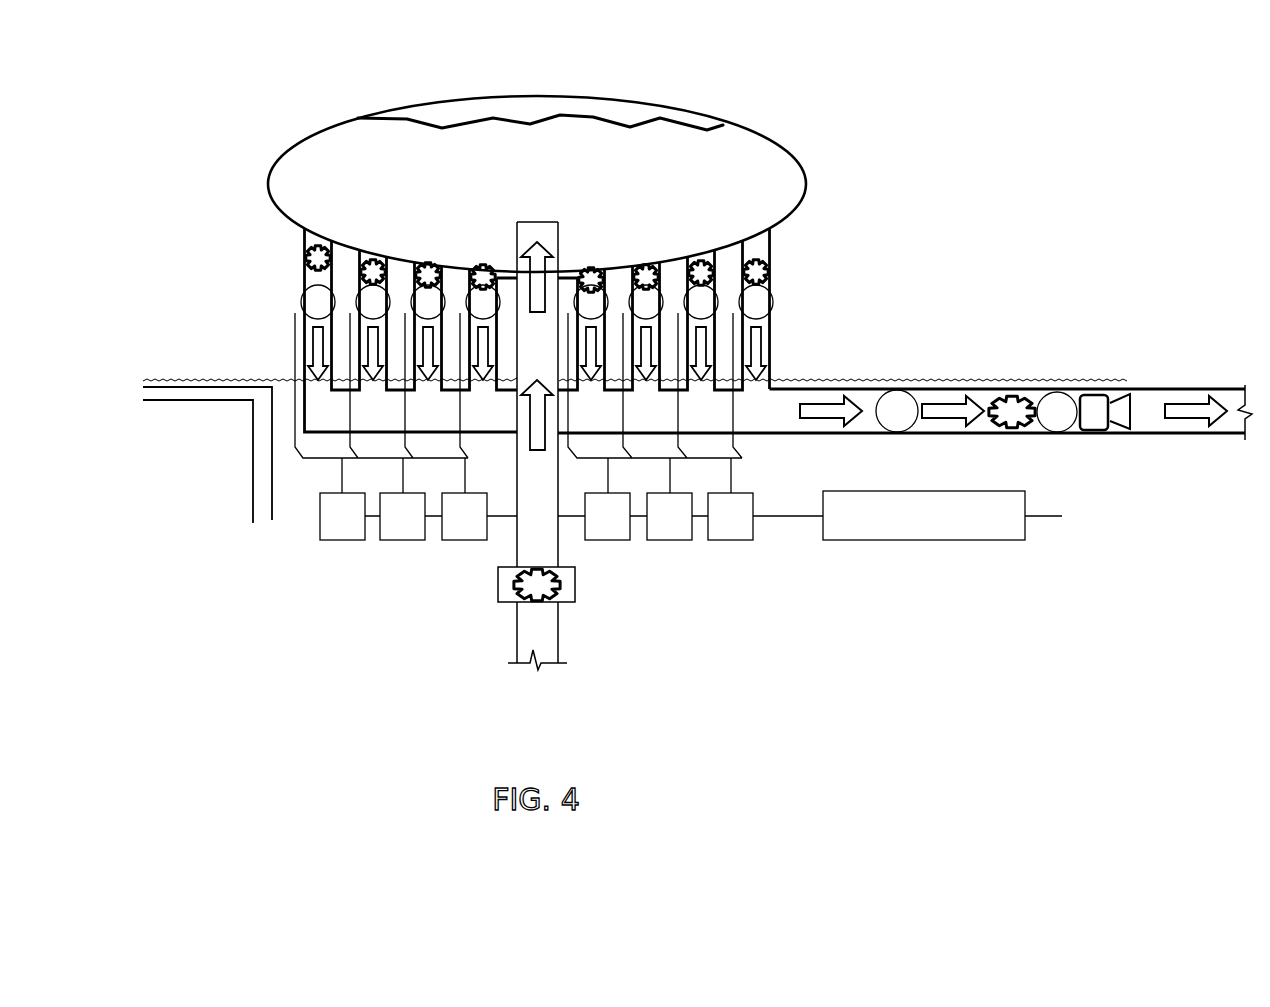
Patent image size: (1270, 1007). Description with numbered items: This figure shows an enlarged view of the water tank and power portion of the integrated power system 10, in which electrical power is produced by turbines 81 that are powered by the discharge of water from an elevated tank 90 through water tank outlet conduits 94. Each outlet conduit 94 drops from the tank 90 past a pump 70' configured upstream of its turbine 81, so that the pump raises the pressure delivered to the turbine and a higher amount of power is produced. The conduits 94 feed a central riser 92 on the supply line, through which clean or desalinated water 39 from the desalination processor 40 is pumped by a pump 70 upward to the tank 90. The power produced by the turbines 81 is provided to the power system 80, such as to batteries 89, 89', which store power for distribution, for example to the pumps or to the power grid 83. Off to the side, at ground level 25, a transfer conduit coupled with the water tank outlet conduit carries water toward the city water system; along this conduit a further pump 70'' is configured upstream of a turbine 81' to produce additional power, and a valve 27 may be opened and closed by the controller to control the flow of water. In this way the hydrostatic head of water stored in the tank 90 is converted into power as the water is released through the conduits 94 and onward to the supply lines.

The integrated power system 10 is at (252, 148).
The elevated tank 90 is at (732, 166).
The water tank outlet conduits 94 is at (758, 248).
The pump 70' is at (537, 257).
The turbine 81 is at (575, 300).
The riser conduit 92 is at (525, 555).
The pump 70 is at (577, 591).
The desalinated water 39 is at (547, 627).
The battery 89 is at (406, 462).
The battery 89' is at (655, 462).
The power grid 83 is at (1010, 540).
The power system 80 is at (762, 545).
The desalination processor 40 is at (182, 438).
The ground level 25 is at (978, 380).
The pump 70'' is at (1013, 442).
The turbine 81' is at (1061, 376).
The valve 27 is at (1090, 418).